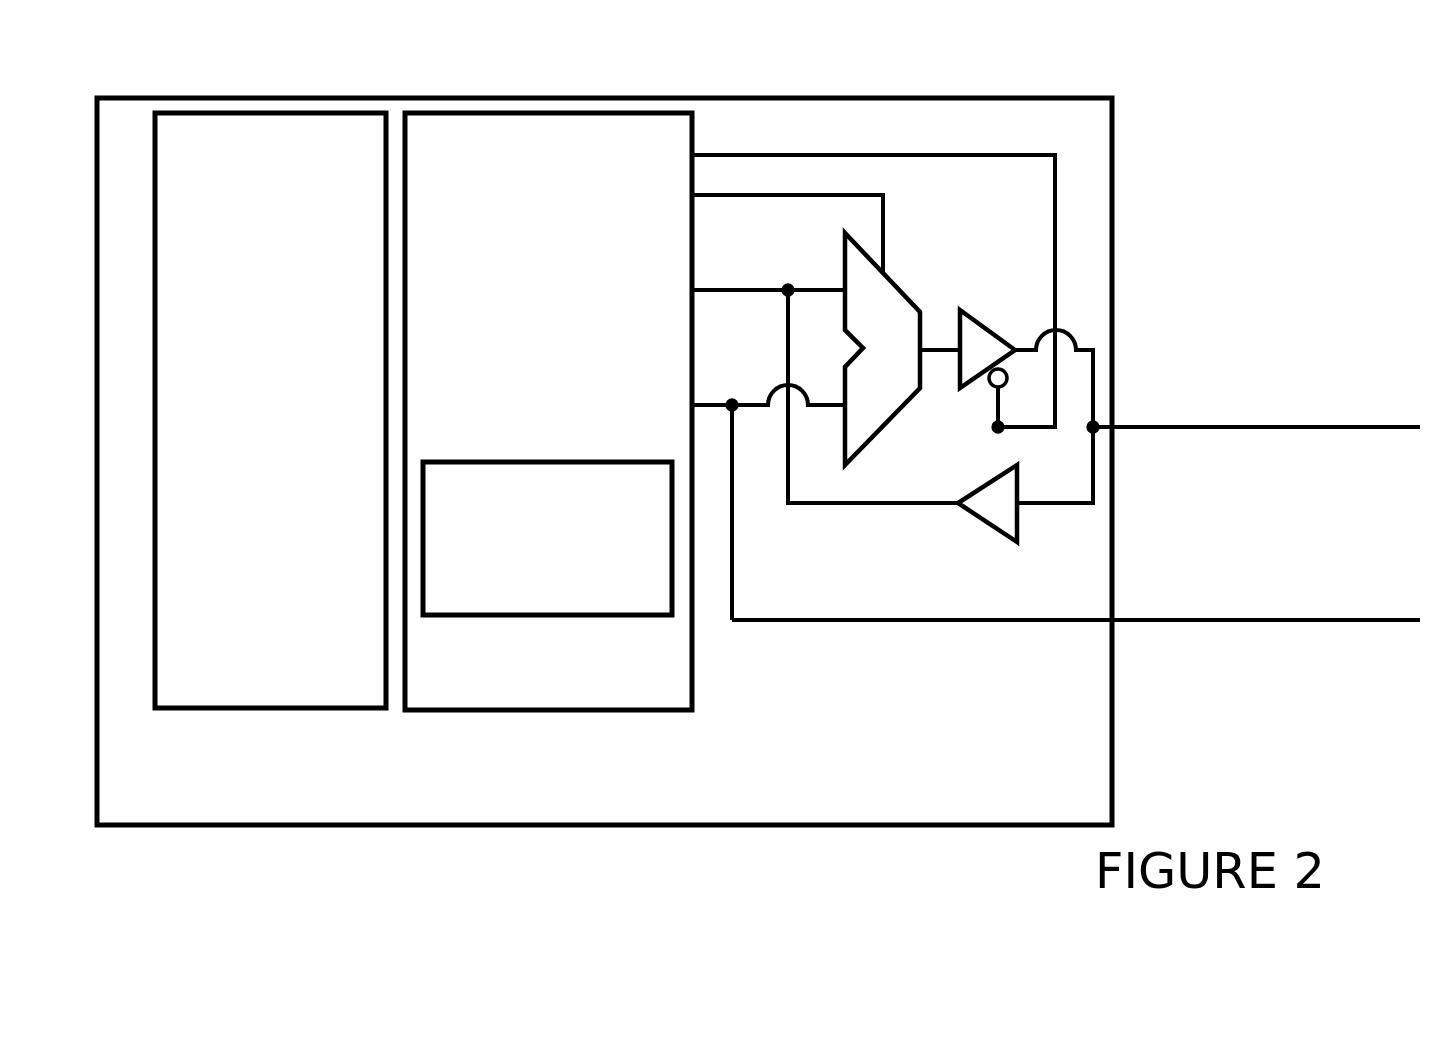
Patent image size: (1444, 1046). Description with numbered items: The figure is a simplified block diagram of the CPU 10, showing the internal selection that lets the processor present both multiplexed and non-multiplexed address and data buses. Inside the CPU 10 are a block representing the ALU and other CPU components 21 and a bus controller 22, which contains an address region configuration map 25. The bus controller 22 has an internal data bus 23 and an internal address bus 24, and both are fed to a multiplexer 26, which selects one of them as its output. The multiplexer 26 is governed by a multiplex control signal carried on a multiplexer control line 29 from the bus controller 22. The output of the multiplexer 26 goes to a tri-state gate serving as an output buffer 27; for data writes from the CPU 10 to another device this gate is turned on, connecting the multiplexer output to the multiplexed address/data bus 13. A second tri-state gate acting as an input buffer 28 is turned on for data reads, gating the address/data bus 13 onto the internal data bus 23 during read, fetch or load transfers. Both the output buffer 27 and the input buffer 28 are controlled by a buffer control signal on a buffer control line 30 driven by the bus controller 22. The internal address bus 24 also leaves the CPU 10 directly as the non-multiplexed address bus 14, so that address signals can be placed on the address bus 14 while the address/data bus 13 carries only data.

The central processing unit (CPU) 10 is at (870, 827).
The multiplexed address/data bus 13 is at (1157, 429).
The address bus 14 is at (1157, 621).
The ALU and other CPU components 21 is at (258, 710).
The bus controller 22 is at (583, 712).
The internal data bus 23 is at (710, 292).
The internal address bus 24 is at (747, 407).
The address region configuration map 25 is at (603, 616).
The multiplexer 26 is at (888, 425).
The tri-state gate (output buffer) 27 is at (963, 389).
The tri-state gate (input buffer) 28 is at (1015, 543).
The multiplexer control line 29 is at (740, 197).
The buffer control line 30 is at (992, 160).